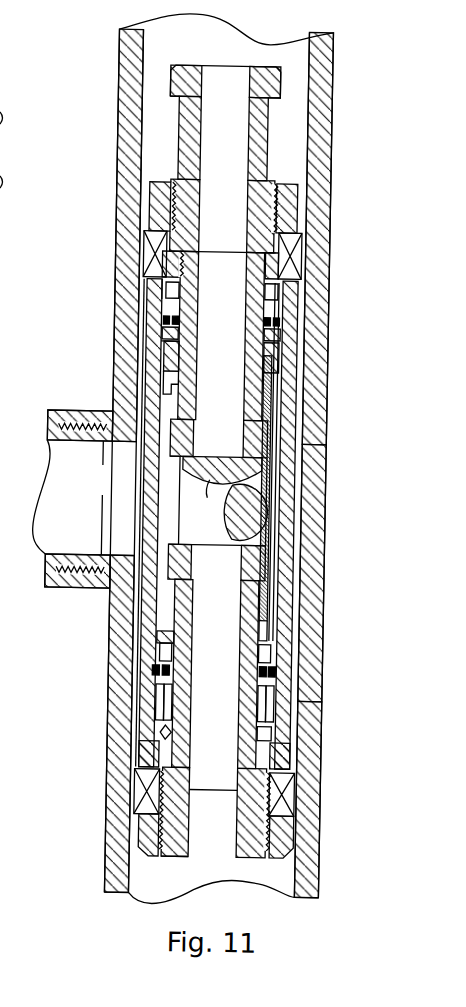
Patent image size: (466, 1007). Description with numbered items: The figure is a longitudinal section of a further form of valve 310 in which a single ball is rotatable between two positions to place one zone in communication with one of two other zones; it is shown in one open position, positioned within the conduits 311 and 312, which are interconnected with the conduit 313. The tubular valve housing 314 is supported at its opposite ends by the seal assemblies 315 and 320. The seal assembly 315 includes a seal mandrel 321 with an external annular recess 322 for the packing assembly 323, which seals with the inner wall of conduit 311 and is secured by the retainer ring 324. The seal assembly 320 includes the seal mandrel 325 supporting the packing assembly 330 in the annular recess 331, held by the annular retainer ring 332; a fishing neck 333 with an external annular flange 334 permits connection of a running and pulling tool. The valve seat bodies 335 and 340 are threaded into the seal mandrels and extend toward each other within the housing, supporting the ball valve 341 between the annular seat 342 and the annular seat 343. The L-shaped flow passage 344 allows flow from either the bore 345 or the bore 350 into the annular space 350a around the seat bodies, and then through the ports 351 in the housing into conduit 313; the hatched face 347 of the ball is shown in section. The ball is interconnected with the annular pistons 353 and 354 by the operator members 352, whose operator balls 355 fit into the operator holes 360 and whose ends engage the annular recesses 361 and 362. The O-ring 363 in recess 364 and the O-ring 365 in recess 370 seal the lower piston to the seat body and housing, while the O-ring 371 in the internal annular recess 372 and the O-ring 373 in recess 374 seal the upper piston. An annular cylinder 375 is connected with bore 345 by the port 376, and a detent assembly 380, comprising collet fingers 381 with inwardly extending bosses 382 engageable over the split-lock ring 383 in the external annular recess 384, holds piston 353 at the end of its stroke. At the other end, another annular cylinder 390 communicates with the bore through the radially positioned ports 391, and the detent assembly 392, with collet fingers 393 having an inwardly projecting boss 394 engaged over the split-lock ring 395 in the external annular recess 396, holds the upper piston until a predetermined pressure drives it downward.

The valve 310 is at (138, 745).
The conduit 311 is at (318, 878).
The conduit 312 is at (326, 53).
The conduit 313 is at (50, 412).
The tubular valve housing 314 is at (312, 574).
The seal assembly 315 is at (300, 779).
The seal assembly 320 is at (300, 241).
The seal mandrel 321 is at (305, 852).
The external annular recess 322 is at (147, 786).
The packing assembly 323 is at (293, 793).
The retainer ring 324 is at (152, 838).
The seal mandrel 325 is at (262, 180).
The packing assembly 330 is at (150, 241).
The annular recess 331 is at (150, 268).
The annular retainer ring 332 is at (160, 206).
The fishing neck 333 is at (184, 118).
The external annular flange 334 is at (266, 79).
The valve seat body 335 is at (258, 714).
The valve seat body 340 is at (290, 392).
The ball valve 341 is at (180, 490).
The annular seat 342 is at (212, 546).
The annular seat 343 is at (214, 458).
The L-shaped flow passage 344 is at (212, 482).
The bore 345 is at (172, 708).
The valve ball face 347 is at (258, 512).
The bore 350 is at (220, 354).
The annular space 350a is at (157, 402).
The ports 351 is at (141, 516).
The operator members 352 is at (272, 432).
The annular piston 353 is at (276, 680).
The annular piston 354 is at (284, 352).
The operator balls 355 is at (279, 474).
The operator holes 360 is at (243, 506).
The annular recess 361 is at (162, 655).
The annular recess 362 is at (163, 344).
The O-ring 363 is at (170, 651).
The annular recess 364 is at (172, 672).
The O-ring 365 is at (160, 678).
The recess 370 is at (268, 683).
The O-ring 371 is at (164, 396).
The internal annular recess 372 is at (258, 330).
The O-ring 373 is at (163, 322).
The recess 374 is at (282, 333).
The annular cylinder 375 is at (268, 751).
The port 376 is at (250, 750).
The detent assembly 380 is at (162, 723).
The collet fingers 381 is at (160, 698).
The inwardly extending bosses 382 is at (180, 718).
The split-lock ring 383 is at (180, 735).
The external annular recess 384 is at (270, 736).
The annular cylinder 390 is at (384, 340).
The radially positioned ports 391 is at (262, 319).
The detent assembly 392 is at (284, 310).
The collet fingers 393 is at (162, 292).
The inwardly projecting boss 394 is at (176, 290).
The split-lock ring 395 is at (182, 303).
The external annular recess 396 is at (282, 290).